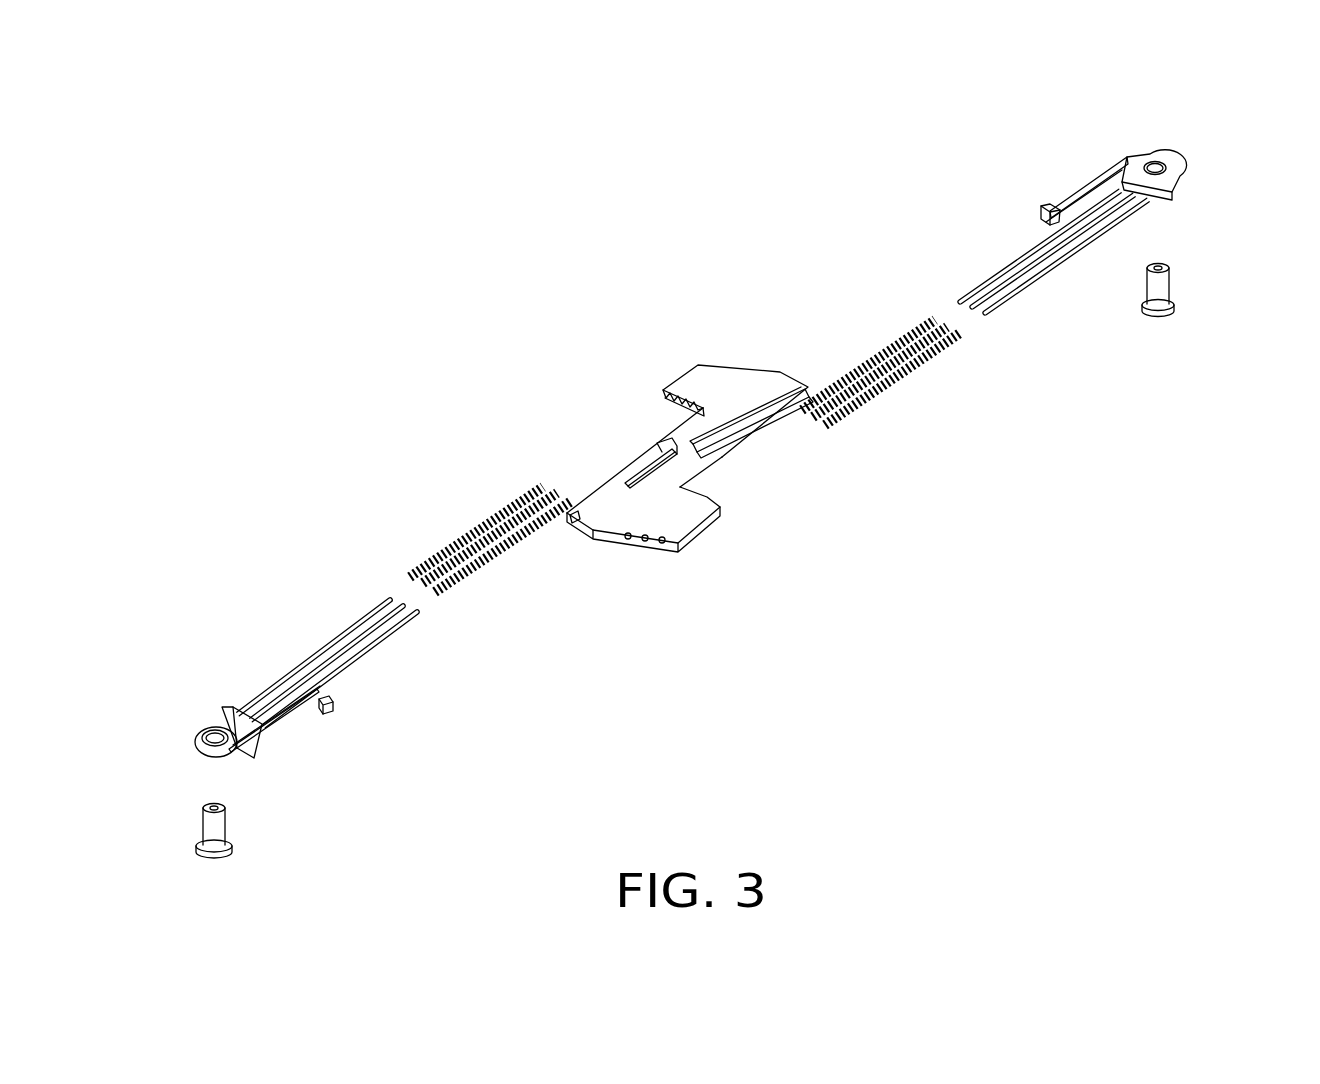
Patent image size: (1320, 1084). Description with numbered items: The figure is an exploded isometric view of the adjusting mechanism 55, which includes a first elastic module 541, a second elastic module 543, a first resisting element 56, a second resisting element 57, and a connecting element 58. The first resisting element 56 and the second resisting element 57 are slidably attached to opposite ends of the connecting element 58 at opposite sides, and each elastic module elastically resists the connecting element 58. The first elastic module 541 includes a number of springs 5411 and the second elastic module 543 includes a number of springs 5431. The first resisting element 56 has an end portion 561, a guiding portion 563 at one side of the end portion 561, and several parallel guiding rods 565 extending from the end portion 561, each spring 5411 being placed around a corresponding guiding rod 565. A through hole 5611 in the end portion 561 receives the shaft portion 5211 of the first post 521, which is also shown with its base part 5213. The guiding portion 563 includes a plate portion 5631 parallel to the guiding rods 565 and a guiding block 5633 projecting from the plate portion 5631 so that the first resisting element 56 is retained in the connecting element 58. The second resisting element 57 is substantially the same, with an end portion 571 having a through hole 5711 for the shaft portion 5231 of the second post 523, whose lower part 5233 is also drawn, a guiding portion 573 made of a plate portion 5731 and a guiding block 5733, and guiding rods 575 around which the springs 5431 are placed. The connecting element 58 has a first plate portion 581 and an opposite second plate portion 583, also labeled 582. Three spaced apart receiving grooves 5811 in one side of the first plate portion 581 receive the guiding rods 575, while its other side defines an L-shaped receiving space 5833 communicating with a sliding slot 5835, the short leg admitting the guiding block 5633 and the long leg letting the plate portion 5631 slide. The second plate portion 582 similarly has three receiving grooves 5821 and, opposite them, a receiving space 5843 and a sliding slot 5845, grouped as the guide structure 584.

The adjusting mechanism 55 is at (702, 219).
The first resisting element 56 is at (289, 645).
The end portion 561 is at (221, 754).
The through hole 5611 is at (207, 722).
The guiding portion 563 is at (442, 705).
The plate portion 5631 is at (287, 727).
The guiding block 5633 is at (331, 702).
The guiding rods 565 is at (380, 635).
The second resisting element 57 is at (1150, 145).
The end portion 571 is at (1165, 188).
The through hole 5711 is at (1168, 159).
The guiding portion 573 is at (965, 123).
The plate portion 5731 is at (1092, 181).
The guiding block 5733 is at (1046, 205).
The guiding rods 575 is at (996, 274).
The connecting element 58 is at (782, 357).
The first plate portion 581 is at (696, 519).
The receiving grooves 5811 is at (662, 544).
The second plate portion 582 is at (718, 380).
The receiving grooves 5821 is at (663, 390).
The second plate portion 583 is at (530, 383).
The receiving space 5833 is at (634, 472).
The sliding slot 5835 is at (577, 504).
The second guiding groove structure 584 is at (887, 458).
The receiving space 5843 is at (744, 451).
The sliding slot 5845 is at (781, 433).
The first elastic module 541 is at (400, 438).
The springs 5411 is at (530, 497).
The second elastic module 543 is at (1048, 378).
The springs 5431 is at (940, 348).
The first post 521 is at (332, 822).
The shaft portion 5211 is at (219, 827).
The flange of first fastener 5213 is at (216, 862).
The second post 523 is at (1108, 387).
The shaft portion 5231 is at (1142, 307).
The flange of second fastener 5233 is at (1177, 307).